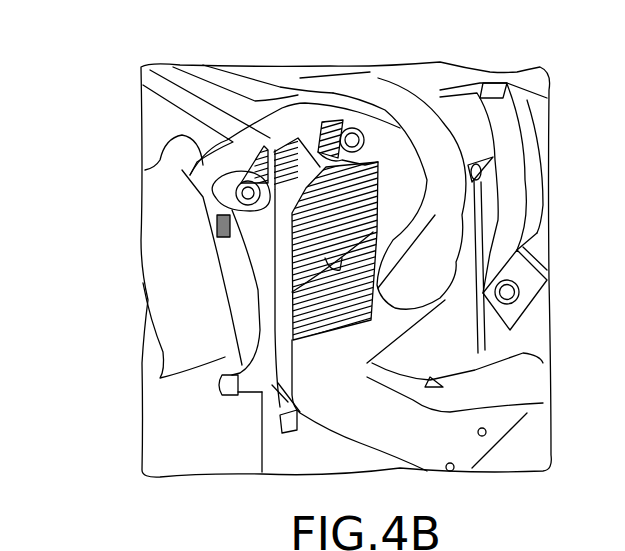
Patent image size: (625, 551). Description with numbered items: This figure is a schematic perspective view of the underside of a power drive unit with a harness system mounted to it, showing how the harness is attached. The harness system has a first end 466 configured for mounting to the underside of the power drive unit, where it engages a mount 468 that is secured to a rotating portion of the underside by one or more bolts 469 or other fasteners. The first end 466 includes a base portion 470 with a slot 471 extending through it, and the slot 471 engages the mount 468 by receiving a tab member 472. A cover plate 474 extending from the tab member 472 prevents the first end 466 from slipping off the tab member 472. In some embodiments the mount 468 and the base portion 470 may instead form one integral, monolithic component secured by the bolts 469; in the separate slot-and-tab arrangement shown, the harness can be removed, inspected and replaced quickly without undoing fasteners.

The first end 466 is at (240, 257).
The mount 468 is at (240, 118).
The bolt 469 is at (227, 193).
The base portion 470 is at (292, 266).
The slot 471 is at (292, 292).
The tab member 472 is at (313, 135).
The cover plate 474 is at (357, 192).